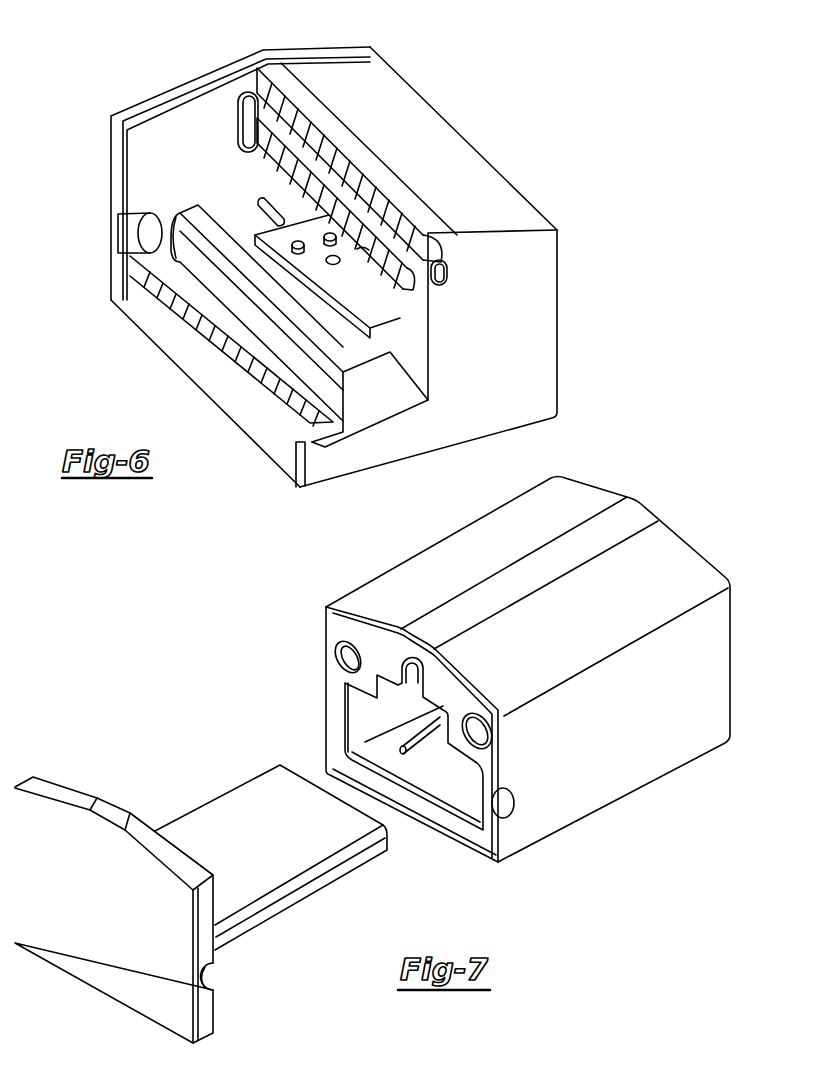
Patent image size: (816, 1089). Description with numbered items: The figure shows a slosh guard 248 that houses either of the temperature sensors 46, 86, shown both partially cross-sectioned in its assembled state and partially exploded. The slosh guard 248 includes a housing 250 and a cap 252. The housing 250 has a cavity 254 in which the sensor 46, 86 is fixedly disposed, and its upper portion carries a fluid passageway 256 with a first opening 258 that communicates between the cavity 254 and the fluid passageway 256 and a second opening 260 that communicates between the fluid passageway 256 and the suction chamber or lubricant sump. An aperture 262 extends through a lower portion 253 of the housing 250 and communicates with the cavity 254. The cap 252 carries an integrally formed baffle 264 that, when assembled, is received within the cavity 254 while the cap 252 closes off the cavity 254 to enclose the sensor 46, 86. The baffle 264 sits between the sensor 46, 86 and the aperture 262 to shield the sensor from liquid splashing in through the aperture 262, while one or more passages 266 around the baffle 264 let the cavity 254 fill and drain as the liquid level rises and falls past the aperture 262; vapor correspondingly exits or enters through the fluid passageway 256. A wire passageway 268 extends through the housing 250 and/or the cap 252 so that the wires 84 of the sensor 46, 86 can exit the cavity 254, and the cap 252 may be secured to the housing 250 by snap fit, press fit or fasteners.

In FIG. 6, the slosh guard 248 is at (381, 47).
In FIG. 7, the slosh guard 248 is at (634, 470).
In FIG. 6, the housing 250 is at (472, 152).
In FIG. 7, the housing 250 is at (672, 528).
In FIG. 6, the cap 252 is at (160, 97).
In FIG. 7, the cap 252 is at (138, 997).
In FIG. 6, the lower portion 253 is at (342, 480).
In FIG. 6, the cavity 254 is at (373, 352).
In FIG. 7, the cavity 254 is at (453, 797).
In FIG. 6, the fluid passageway 256 is at (307, 155).
In FIG. 6, the first opening 258 is at (250, 100).
In FIG. 7, the first opening 258 is at (410, 678).
In FIG. 6, the second opening 260 is at (442, 277).
In FIG. 6, the aperture 262 is at (233, 323).
In FIG. 6, the baffle 264 is at (242, 275).
In FIG. 7, the baffle 264 is at (205, 815).
In FIG. 6, the passages 266 is at (183, 278).
In FIG. 6, the wire passageway 268 is at (132, 232).
In FIG. 7, the wire passageway 268 is at (510, 808).
In FIG. 6, the first temperature sensor 46 is at (383, 294).
In FIG. 6, the second temperature sensor 86 is at (373, 310).
In FIG. 7, the wires 84 is at (400, 748).